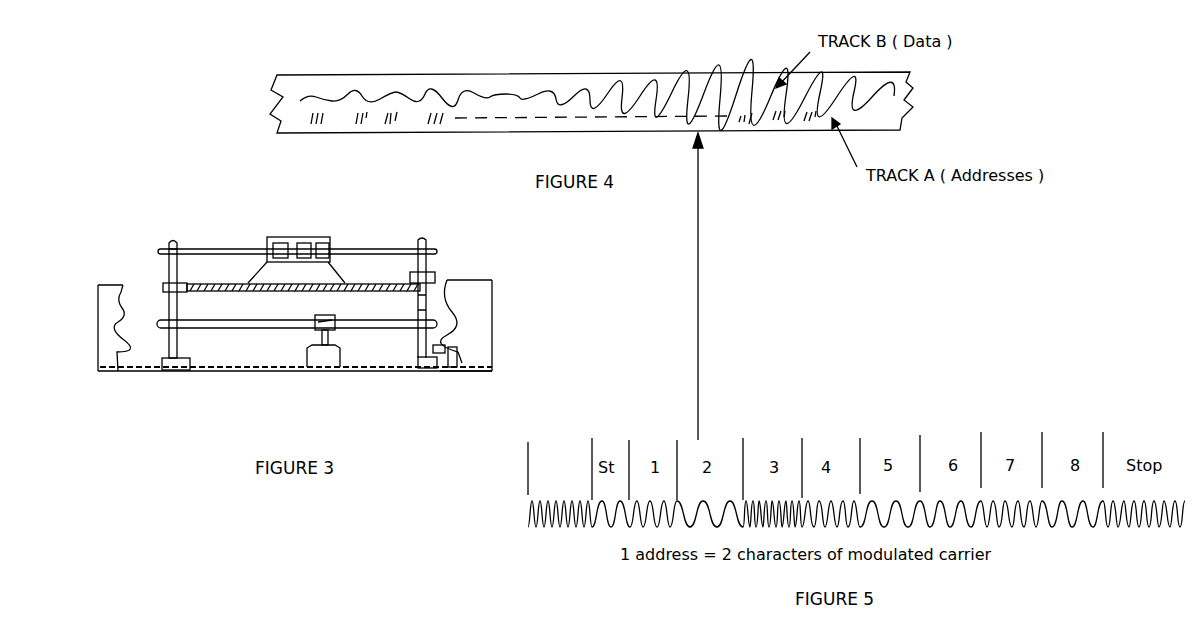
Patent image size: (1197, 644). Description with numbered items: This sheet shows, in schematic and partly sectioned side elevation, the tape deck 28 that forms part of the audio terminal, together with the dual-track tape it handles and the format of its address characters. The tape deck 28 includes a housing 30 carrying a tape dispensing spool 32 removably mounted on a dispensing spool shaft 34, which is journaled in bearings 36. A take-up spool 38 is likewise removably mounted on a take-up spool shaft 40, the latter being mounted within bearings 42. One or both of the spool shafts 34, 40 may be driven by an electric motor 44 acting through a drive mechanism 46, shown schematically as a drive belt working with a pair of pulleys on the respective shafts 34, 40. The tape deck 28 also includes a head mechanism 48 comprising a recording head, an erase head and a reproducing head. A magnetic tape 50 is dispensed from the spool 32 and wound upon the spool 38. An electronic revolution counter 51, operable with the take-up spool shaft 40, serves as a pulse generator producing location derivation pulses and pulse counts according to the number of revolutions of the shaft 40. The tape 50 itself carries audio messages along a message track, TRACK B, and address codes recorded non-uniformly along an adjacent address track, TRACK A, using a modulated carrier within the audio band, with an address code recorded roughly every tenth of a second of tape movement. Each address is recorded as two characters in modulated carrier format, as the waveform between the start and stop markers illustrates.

In FIG. 3, the tape deck 28 is at (503, 380).
In FIG. 3, the housing 30 is at (480, 302).
In FIG. 3, the tape dispensing spool 32 is at (165, 248).
In FIG. 3, the dispensing spool shaft 34 is at (172, 305).
In FIG. 3, the bearings 36 is at (177, 367).
In FIG. 3, the take-up spool 38 is at (428, 247).
In FIG. 3, the take-up spool shaft 40 is at (418, 302).
In FIG. 3, the bearings 42 is at (424, 273).
In FIG. 3, the electric motor 44 is at (328, 363).
In FIG. 3, the drive mechanism 46 is at (252, 328).
In FIG. 3, the head mechanism 48 is at (332, 243).
In FIG. 3, the tape 50 is at (222, 248).
In FIG. 4, the tape 50 is at (905, 100).
In FIG. 3, the electronic revolution counter 51 is at (453, 357).